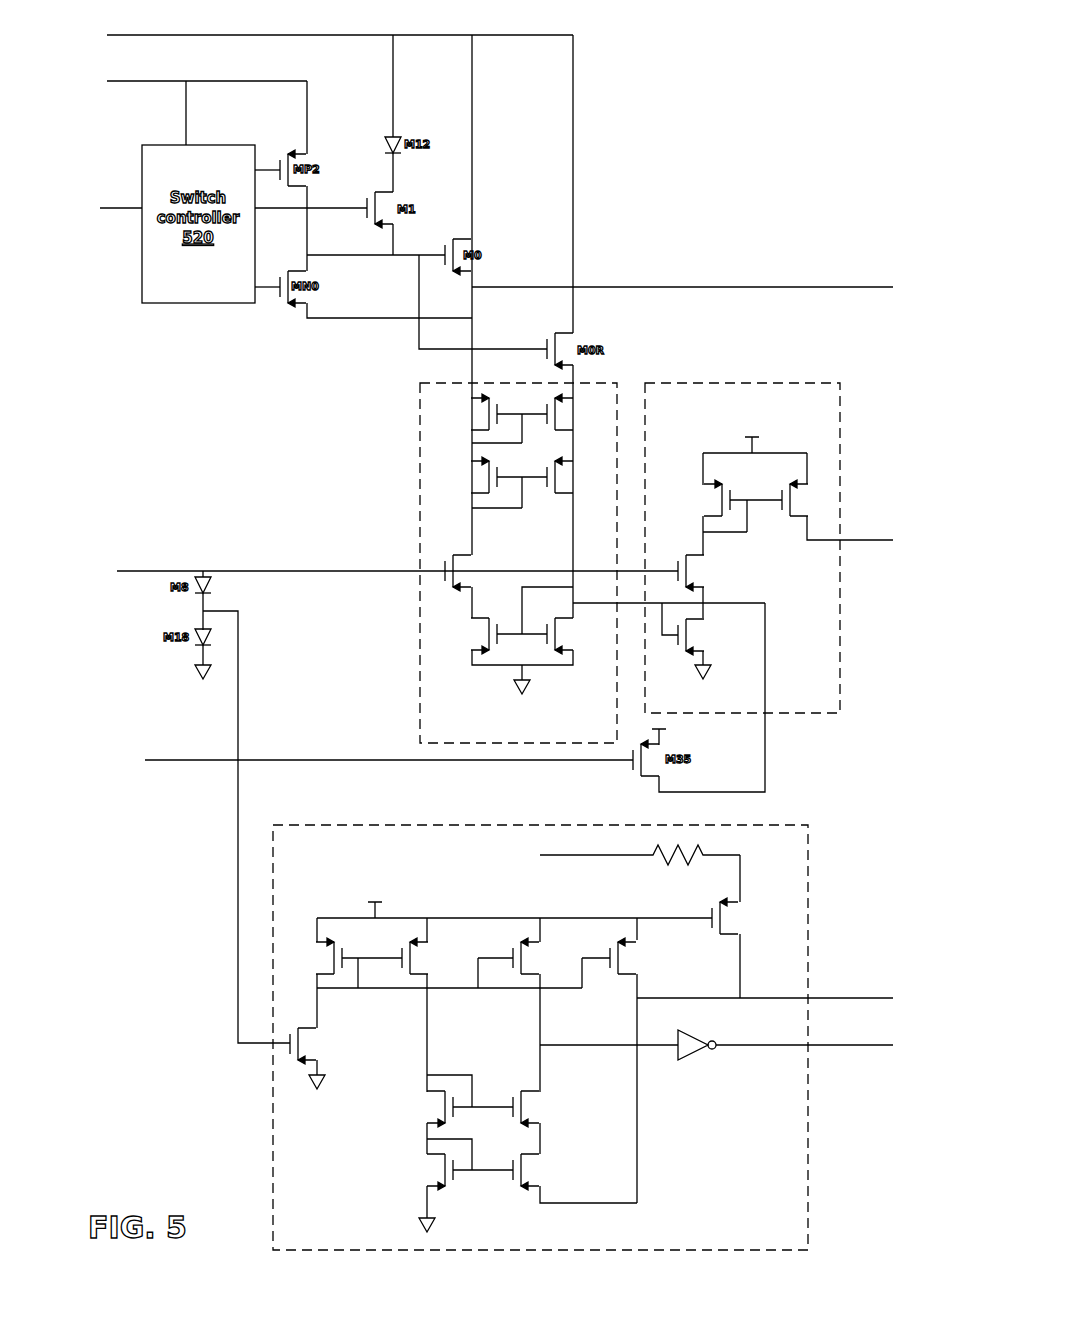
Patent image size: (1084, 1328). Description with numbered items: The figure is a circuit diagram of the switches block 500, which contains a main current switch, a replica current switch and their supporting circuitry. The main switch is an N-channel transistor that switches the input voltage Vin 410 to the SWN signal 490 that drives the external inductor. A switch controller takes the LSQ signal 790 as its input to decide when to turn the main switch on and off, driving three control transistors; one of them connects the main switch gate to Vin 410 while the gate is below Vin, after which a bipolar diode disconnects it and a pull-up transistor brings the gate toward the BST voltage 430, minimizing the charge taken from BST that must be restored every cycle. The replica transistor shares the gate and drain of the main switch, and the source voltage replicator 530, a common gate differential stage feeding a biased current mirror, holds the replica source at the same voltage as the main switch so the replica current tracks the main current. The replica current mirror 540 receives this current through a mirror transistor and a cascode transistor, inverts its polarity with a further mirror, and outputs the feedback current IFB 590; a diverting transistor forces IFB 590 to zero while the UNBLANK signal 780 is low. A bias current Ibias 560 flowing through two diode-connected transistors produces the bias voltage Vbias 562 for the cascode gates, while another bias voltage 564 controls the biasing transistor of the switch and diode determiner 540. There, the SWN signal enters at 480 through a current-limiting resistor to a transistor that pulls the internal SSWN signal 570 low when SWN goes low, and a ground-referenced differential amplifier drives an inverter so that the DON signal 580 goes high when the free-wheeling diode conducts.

The Vin voltage 410 is at (120, 35).
The BST voltage 430 is at (120, 81).
The LSQ signal 790 is at (112, 208).
The switches block 500 is at (717, 142).
The SWN signal 490 is at (846, 287).
The source voltage replicator 530 is at (420, 700).
The replica current mirror 540 is at (762, 383).
The bias current Ibias 560 is at (153, 571).
The bias voltage Vbias 562 is at (313, 571).
The bias voltage 564 is at (238, 998).
The UNBLANK signal 780 is at (165, 760).
The feedback current IFB 590 is at (874, 540).
The SWN sense connection 480 is at (570, 855).
The SSWN signal 570 is at (826, 998).
The DON signal 580 is at (835, 1045).